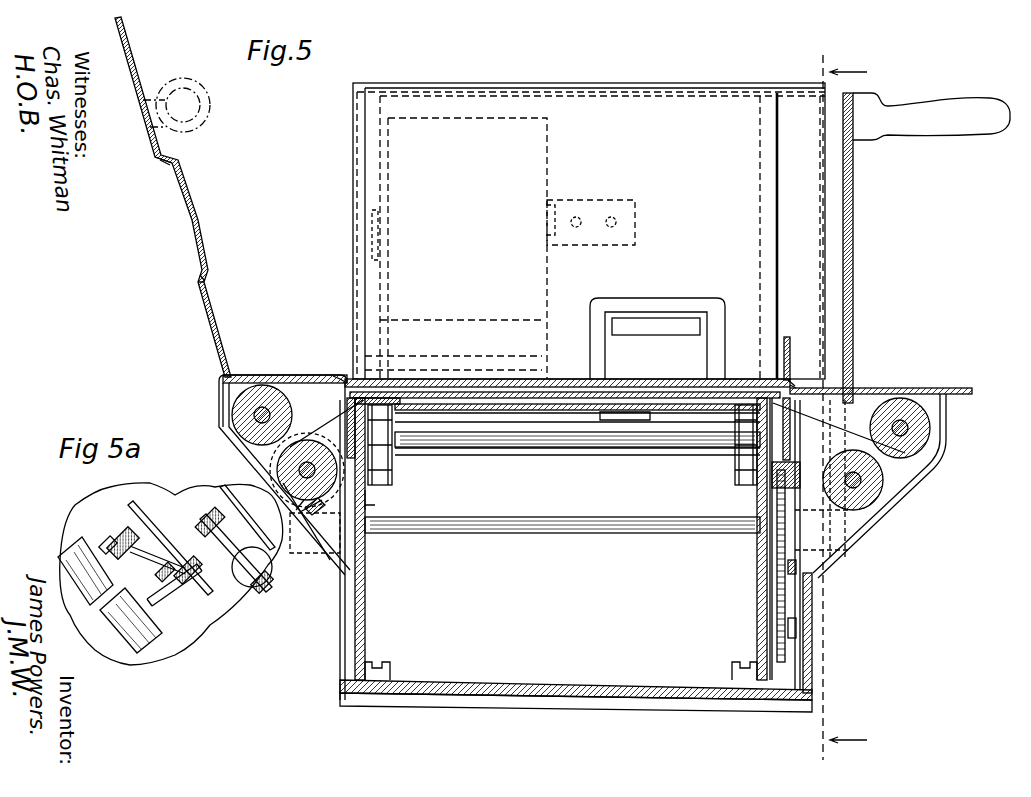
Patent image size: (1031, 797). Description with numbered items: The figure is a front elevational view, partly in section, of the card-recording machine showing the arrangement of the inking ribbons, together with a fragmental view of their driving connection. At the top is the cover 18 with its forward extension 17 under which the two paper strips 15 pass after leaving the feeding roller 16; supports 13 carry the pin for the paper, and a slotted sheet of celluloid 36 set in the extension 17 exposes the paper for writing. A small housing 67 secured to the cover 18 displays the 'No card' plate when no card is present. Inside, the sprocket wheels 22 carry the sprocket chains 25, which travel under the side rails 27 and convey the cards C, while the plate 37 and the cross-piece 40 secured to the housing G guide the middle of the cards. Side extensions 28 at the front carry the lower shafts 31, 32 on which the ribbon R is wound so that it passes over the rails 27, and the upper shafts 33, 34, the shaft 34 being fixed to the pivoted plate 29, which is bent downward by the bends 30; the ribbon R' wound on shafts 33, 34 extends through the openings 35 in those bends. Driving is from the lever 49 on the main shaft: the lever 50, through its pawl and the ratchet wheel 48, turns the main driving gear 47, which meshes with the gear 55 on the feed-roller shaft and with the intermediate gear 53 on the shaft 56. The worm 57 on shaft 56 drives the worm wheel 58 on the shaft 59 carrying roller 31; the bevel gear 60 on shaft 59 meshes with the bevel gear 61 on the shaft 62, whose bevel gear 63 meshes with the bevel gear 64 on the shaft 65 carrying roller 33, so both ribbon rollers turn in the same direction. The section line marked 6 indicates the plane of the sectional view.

In FIG. 5, the cover 18 is at (664, 98).
In FIG. 5, the feeding roller 16 is at (495, 320).
In FIG. 5, the supports 13 is at (575, 180).
In FIG. 5, the sheet of celluloid 36 is at (421, 378).
In FIG. 5, the small housing 67 is at (675, 306).
In FIG. 5, the gear 55 is at (788, 340).
In FIG. 5, the lever 49 is at (853, 218).
In FIG. 5, the section line 6 is at (834, 409).
In FIG. 5, the strips of paper 15 is at (487, 379).
In FIG. 5, the forward extension 17 is at (558, 379).
In FIG. 5, the plate 29 is at (190, 324).
In FIG. 5, the bends 30 is at (170, 160).
In FIG. 5, the openings 35 is at (167, 168).
In FIG. 5, the ribbon R' is at (278, 359).
In FIG. 5, the ribbon R is at (317, 409).
In FIG. 5, the side extensions 28 is at (223, 436).
In FIG. 5, the shaft 33 is at (232, 408).
In FIG. 5A, the shaft 33 is at (66, 552).
In FIG. 5, the shaft 31 is at (280, 470).
In FIG. 5A, the shaft 31 is at (118, 650).
In FIG. 5, the shaft 34 is at (930, 430).
In FIG. 5, the shaft 32 is at (870, 495).
In FIG. 5, the housing G is at (576, 555).
In FIG. 5, the side rails 27 is at (350, 420).
In FIG. 5, the sprocket chains 25 is at (392, 470).
In FIG. 5, the sprocket wheels 22 is at (577, 444).
In FIG. 5, the plate 37 is at (520, 430).
In FIG. 5, the cards C is at (598, 425).
In FIG. 5, the cross-piece 40 is at (645, 450).
In FIG. 5, the shaft 56 is at (492, 519).
In FIG. 5A, the shaft 56 is at (272, 575).
In FIG. 5, the shaft 59 is at (370, 500).
In FIG. 5A, the shaft 59 is at (175, 588).
In FIG. 5, the worm wheel 58 is at (290, 500).
In FIG. 5A, the worm wheel 58 is at (203, 518).
In FIG. 5, the worm 57 is at (305, 510).
In FIG. 5A, the worm 57 is at (245, 570).
In FIG. 5, the main driving gear 47 is at (770, 580).
In FIG. 5, the intermediate gear 53 is at (772, 485).
In FIG. 5, the ratchet wheel 48 is at (796, 574).
In FIG. 5, the lever 50 is at (800, 626).
In FIG. 5A, the shaft 65 is at (123, 528).
In FIG. 5A, the bevel gear 63 is at (135, 530).
In FIG. 5A, the bevel gear 64 is at (110, 538).
In FIG. 5A, the shaft 62 is at (145, 558).
In FIG. 5A, the bevel gear 61 is at (158, 578).
In FIG. 5A, the bevel gear 60 is at (188, 562).